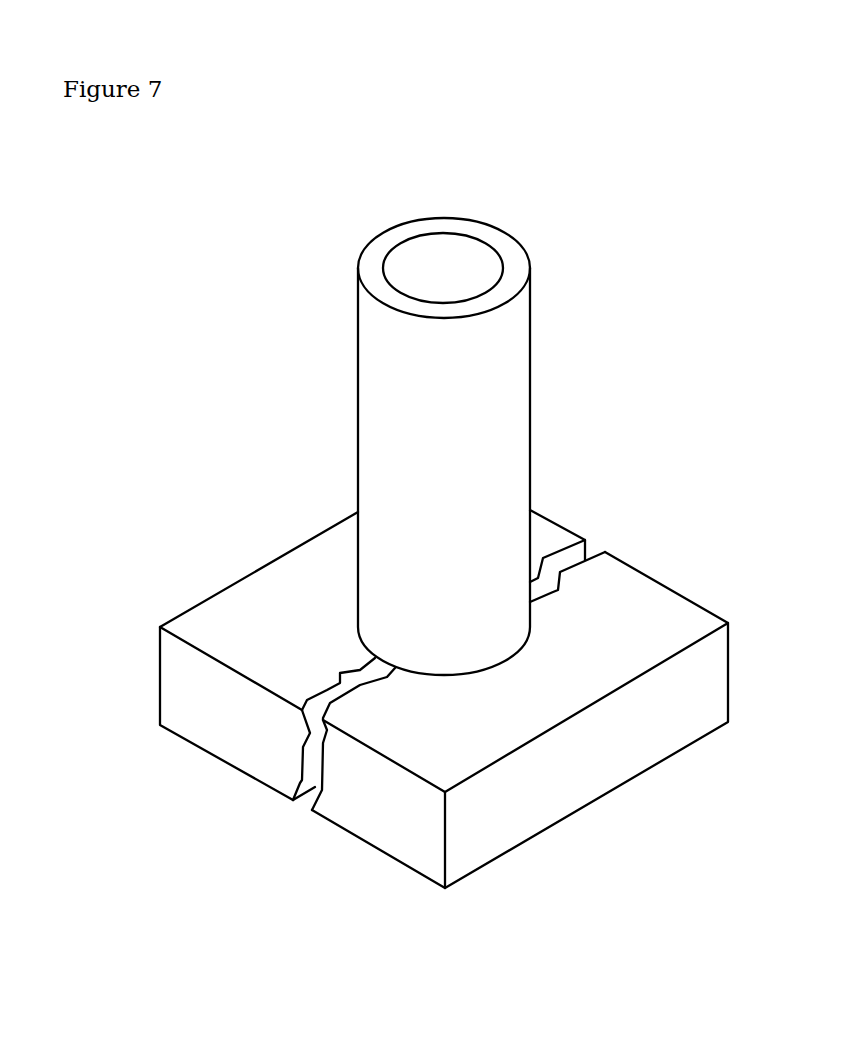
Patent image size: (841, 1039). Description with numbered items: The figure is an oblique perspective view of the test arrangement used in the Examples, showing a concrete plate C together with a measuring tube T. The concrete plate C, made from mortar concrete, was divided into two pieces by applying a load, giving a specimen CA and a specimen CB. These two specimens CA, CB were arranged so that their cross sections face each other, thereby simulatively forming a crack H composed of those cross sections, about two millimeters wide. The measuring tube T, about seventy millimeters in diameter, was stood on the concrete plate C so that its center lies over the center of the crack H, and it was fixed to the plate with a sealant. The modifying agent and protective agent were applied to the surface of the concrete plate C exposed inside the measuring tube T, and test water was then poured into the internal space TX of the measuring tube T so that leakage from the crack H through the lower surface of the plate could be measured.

The measuring tube T is at (355, 232).
The internal space of the measuring tube TX is at (439, 262).
The concrete plate C is at (138, 856).
The specimen CA is at (245, 750).
The specimen CB is at (375, 827).
The crack H is at (575, 557).